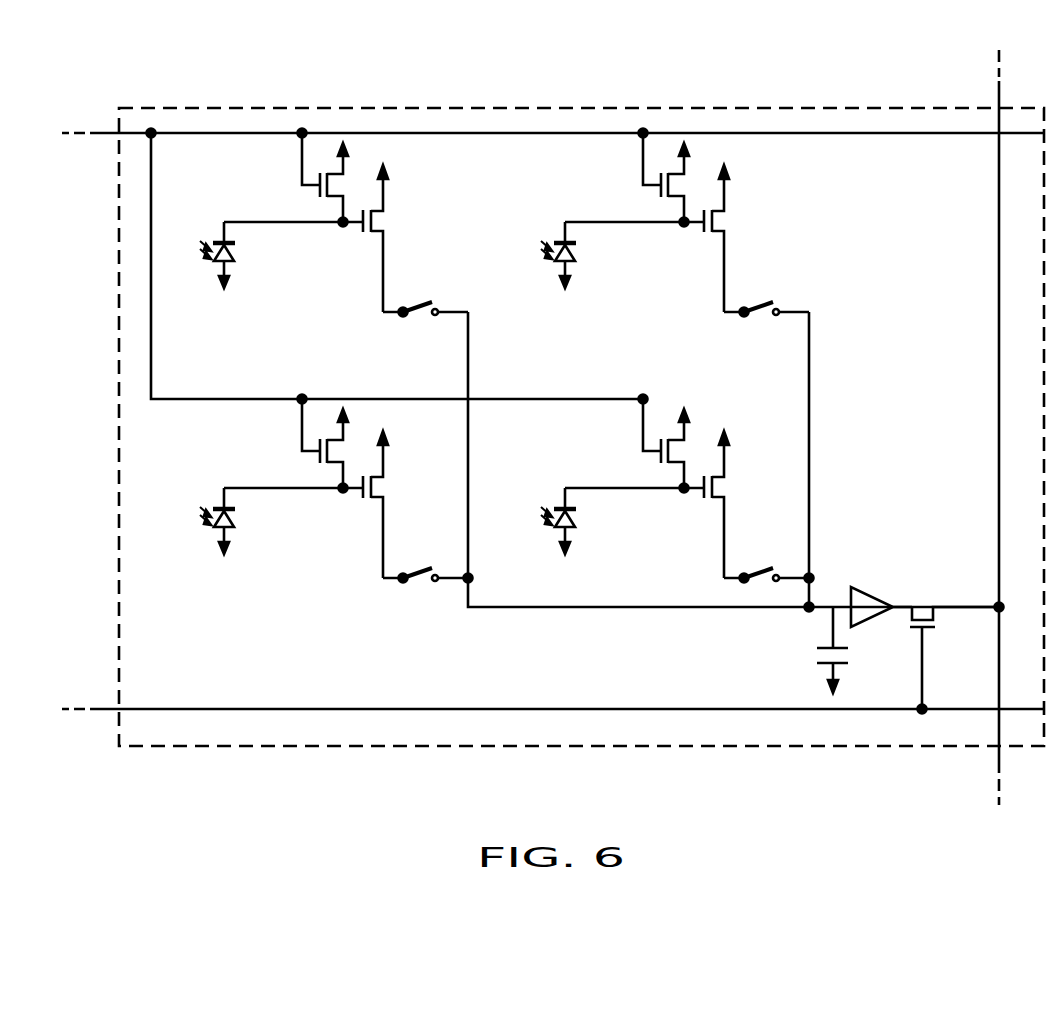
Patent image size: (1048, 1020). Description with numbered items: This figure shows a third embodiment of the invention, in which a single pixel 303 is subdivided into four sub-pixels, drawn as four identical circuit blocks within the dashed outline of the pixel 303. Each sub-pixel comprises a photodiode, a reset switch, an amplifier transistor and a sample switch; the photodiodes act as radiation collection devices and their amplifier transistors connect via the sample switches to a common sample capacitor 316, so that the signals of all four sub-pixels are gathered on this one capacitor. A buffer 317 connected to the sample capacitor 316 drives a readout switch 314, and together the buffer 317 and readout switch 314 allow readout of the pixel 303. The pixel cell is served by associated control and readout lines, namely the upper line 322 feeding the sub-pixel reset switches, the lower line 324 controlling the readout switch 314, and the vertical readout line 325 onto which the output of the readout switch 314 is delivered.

The pixel 303 is at (119, 450).
The readout switch 314 is at (928, 607).
The sample capacitor 316 is at (817, 656).
The buffer 317 is at (863, 587).
The control line 322 is at (866, 134).
The control line 324 is at (232, 709).
The readout line 325 is at (999, 220).